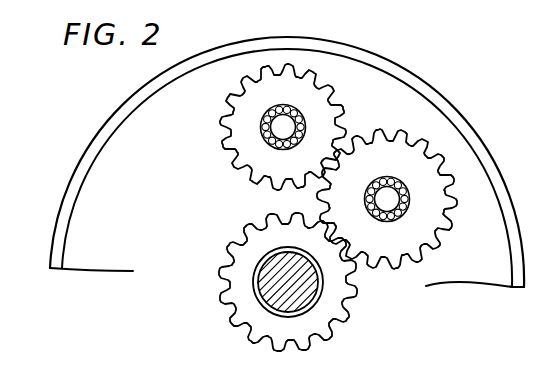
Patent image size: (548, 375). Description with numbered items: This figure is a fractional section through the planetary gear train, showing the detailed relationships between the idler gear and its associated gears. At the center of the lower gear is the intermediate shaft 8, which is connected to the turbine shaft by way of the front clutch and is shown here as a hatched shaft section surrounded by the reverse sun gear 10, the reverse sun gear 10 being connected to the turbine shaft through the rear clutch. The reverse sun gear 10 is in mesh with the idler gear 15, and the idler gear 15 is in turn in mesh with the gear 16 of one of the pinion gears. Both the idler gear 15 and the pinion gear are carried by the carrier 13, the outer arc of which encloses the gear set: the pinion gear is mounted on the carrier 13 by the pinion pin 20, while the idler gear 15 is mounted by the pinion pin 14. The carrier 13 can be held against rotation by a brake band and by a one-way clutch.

The intermediate shaft 8 is at (268, 282).
The reverse sun gear 10 is at (339, 300).
The carrier 13 is at (117, 113).
The pinion pin 14 is at (388, 196).
The idler gear 15 is at (436, 245).
The gear of the pinion gear 16 is at (333, 112).
The pinion pin 20 is at (272, 128).